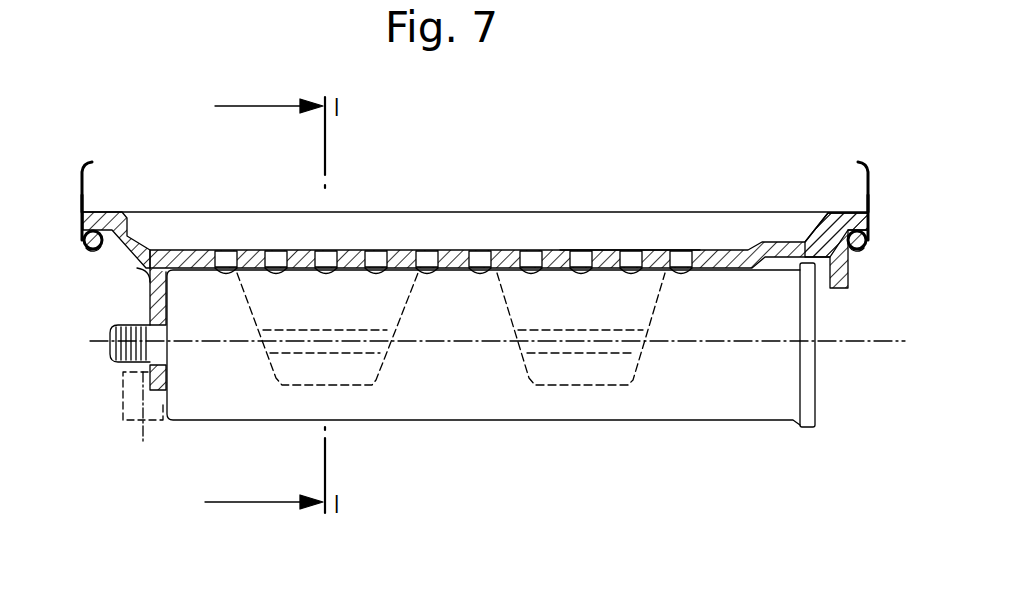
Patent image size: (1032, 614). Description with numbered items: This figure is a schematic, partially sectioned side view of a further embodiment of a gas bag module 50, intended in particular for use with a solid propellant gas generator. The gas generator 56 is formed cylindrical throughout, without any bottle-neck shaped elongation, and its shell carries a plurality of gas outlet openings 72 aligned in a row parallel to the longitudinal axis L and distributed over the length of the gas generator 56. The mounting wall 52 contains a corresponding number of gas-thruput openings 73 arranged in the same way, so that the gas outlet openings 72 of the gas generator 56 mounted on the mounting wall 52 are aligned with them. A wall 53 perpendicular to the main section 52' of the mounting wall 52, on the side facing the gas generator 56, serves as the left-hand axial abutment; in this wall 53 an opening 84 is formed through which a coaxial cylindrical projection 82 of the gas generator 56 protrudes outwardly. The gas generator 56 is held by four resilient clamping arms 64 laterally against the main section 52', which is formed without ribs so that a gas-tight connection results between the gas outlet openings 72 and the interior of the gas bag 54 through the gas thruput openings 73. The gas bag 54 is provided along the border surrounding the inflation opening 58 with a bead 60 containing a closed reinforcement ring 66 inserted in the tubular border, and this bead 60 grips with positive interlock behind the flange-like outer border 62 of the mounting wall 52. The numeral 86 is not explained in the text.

The gas bag module 50 is at (569, 182).
The mounting wall 52 is at (509, 227).
The main section of the mounting wall 52' is at (630, 208).
The wall 53 is at (156, 292).
The gas bag 54 is at (83, 168).
The gas generator 56 is at (736, 430).
The inflation opening 58 is at (87, 203).
The bead 60 is at (85, 259).
The outer border 62 is at (97, 218).
The resilient clamping arms 64 is at (358, 388).
The reinforcement ring 66 is at (84, 242).
The gas outlet openings 72 is at (238, 276).
The gas-thruput openings 73 is at (229, 250).
The coaxial cylindrical projection 82 is at (120, 360).
The opening 84 is at (166, 362).
The bracket 86 is at (124, 402).
The longitudinal axis L is at (893, 345).